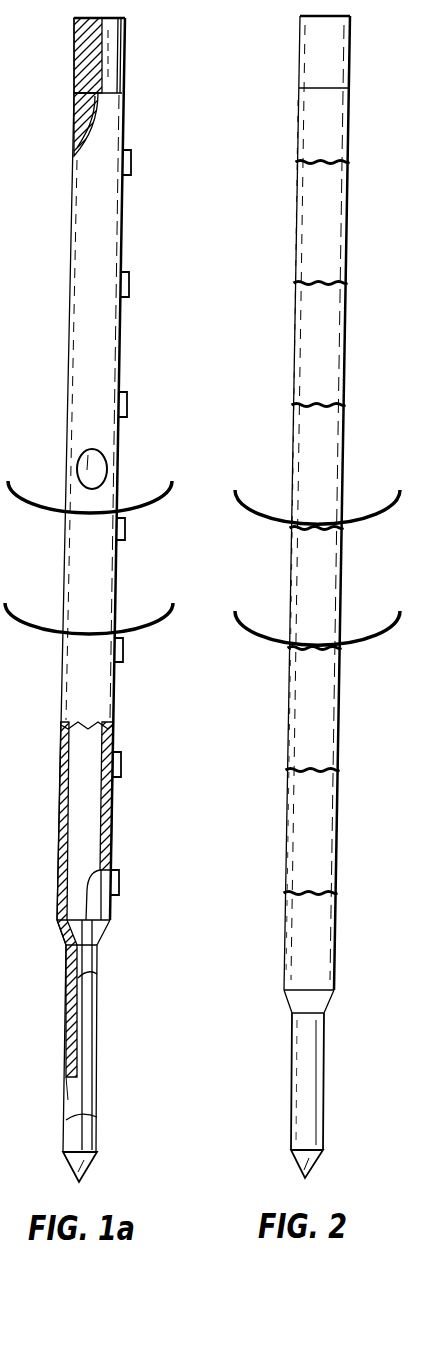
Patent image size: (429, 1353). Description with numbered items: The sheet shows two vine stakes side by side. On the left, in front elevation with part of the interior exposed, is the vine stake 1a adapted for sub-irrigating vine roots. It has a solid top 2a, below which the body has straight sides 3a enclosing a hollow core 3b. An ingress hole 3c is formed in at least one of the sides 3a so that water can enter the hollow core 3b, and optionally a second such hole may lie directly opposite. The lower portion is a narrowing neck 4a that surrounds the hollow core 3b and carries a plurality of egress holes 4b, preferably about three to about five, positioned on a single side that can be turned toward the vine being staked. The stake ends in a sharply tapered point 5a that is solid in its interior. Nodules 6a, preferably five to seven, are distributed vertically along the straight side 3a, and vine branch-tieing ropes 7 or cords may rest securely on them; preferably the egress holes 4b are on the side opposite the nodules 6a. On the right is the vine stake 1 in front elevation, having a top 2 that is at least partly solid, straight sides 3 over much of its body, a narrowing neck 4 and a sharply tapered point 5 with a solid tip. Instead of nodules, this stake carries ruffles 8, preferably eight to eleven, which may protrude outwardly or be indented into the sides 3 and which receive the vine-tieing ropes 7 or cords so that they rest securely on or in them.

In FIG. 1a, the vine stake 1a is at (132, 251).
In FIG. 1a, the solid top 2a is at (126, 58).
In FIG. 1a, the straight sides 3a is at (125, 209).
In FIG. 1a, the hollow core 3b is at (93, 359).
In FIG. 1a, the ingress hole 3c is at (108, 470).
In FIG. 1a, the narrowing neck 4a is at (97, 959).
In FIG. 1a, the egress holes 4b is at (97, 974).
In FIG. 1a, the sharply tapered point 5a is at (93, 1166).
In FIG. 1a, the nodules 6a is at (125, 524).
In FIG. 1a, the vine branch-tieing ropes 7 is at (163, 617).
In FIG. 2, the vine branch-tieing ropes 7 is at (362, 641).
In FIG. 2, the vine stake 1 is at (366, 331).
In FIG. 2, the top 2 is at (352, 52).
In FIG. 2, the straight sides 3 is at (298, 202).
In FIG. 2, the narrowing neck 4 is at (323, 1045).
In FIG. 2, the sharply tapered point 5 is at (318, 1160).
In FIG. 2, the ruffles 8 is at (345, 404).